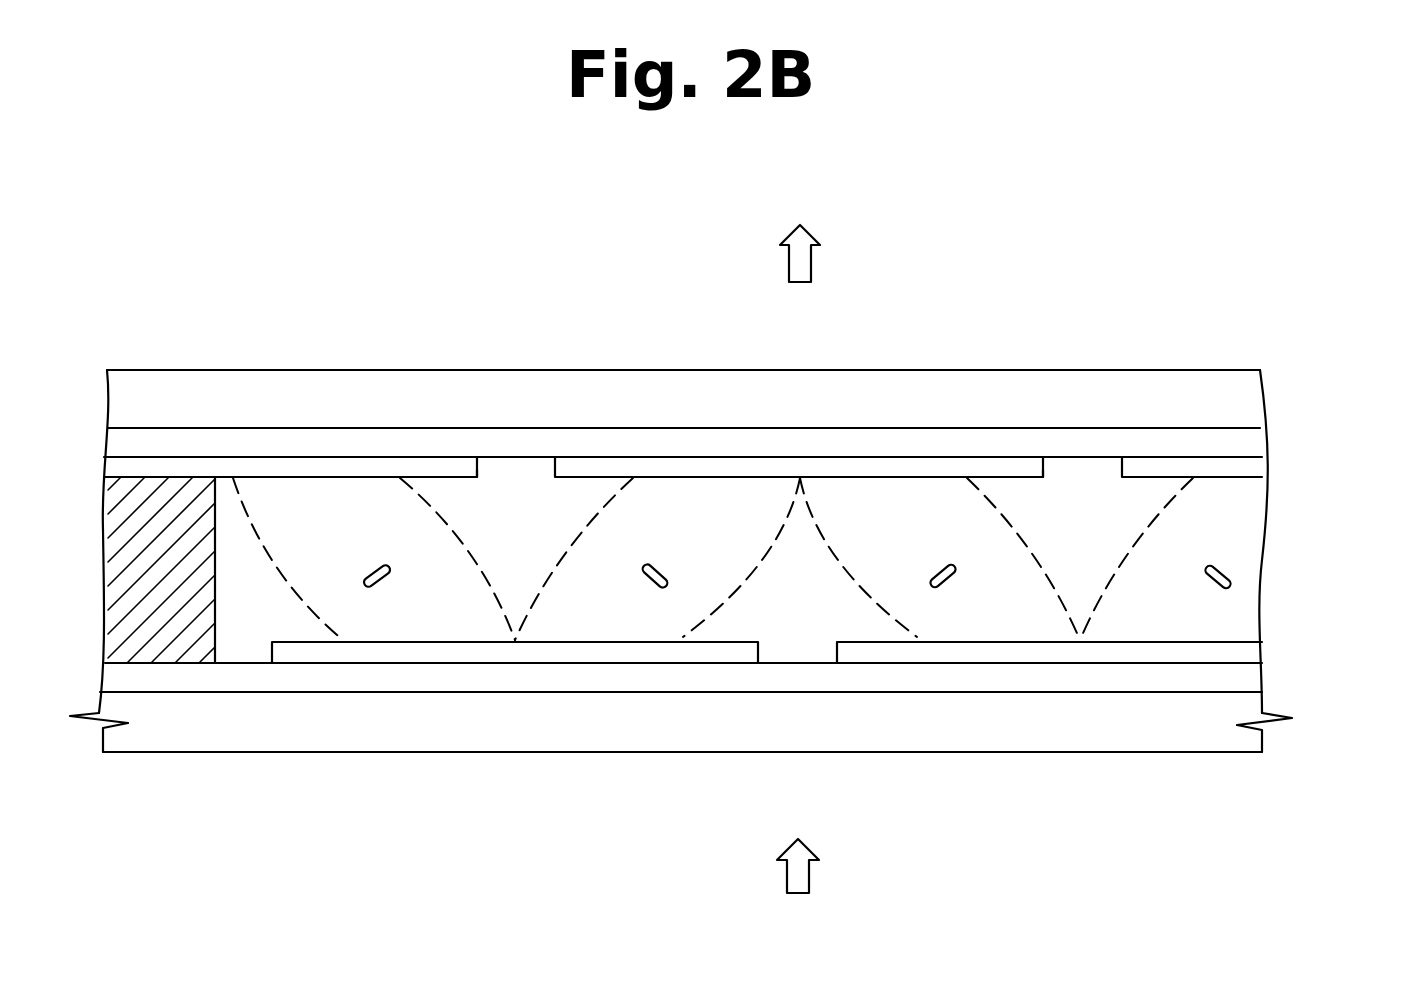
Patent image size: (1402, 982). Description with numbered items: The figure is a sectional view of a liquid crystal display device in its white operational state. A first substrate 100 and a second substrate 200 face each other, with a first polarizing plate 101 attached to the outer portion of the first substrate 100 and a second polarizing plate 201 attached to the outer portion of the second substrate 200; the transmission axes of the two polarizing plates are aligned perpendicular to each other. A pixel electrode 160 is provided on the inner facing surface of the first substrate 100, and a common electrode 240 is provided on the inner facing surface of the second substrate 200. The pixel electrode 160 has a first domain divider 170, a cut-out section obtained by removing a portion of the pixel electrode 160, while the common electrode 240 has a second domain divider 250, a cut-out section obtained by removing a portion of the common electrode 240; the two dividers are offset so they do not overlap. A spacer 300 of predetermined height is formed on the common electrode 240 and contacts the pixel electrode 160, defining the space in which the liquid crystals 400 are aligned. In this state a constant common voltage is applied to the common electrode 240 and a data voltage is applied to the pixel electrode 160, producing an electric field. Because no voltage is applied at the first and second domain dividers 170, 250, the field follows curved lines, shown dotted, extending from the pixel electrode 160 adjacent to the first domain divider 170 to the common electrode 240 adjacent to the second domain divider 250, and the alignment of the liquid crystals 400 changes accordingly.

The second polarizing plate 201 is at (1243, 395).
The second substrate 200 is at (1243, 437).
The common electrode 240 is at (345, 467).
The second domain divider 250 is at (486, 468).
The liquid crystals 400 is at (367, 567).
The pixel electrode 160 is at (468, 657).
The first domain divider 170 is at (832, 655).
The first substrate 100 is at (1243, 683).
The first polarizing plate 101 is at (1243, 740).
The spacer 300 is at (160, 653).